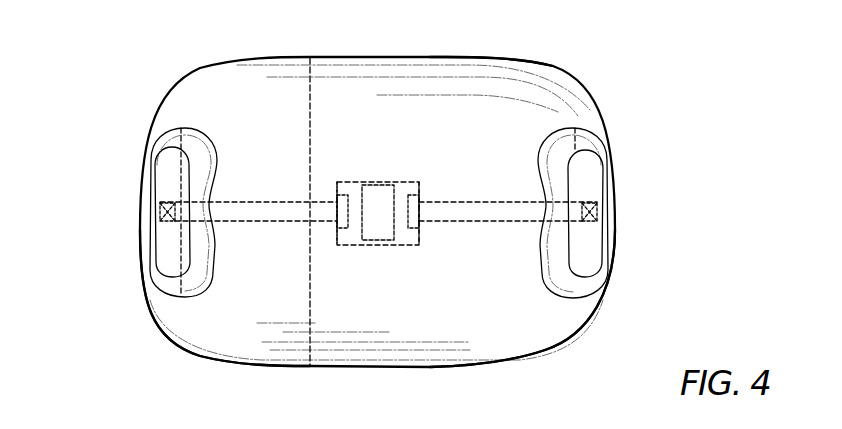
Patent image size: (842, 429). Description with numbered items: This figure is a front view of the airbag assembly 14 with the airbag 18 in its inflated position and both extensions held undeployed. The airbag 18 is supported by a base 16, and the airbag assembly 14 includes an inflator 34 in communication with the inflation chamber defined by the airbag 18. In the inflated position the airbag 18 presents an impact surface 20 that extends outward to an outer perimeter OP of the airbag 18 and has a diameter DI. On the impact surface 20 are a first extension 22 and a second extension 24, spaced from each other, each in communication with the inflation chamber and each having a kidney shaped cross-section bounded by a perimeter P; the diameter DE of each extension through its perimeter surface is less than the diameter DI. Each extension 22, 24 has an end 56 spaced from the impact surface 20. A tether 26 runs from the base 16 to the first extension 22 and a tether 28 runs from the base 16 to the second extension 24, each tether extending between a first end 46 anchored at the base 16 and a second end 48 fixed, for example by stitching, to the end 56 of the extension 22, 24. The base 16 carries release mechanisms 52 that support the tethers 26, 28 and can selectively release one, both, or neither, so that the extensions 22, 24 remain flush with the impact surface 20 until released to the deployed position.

The airbag assembly 14 is at (648, 200).
The base 16 is at (377, 182).
The airbag 18 is at (532, 328).
The impact surface 20 is at (422, 309).
The first extension 22 is at (152, 262).
The second extension 24 is at (604, 259).
The tether 26 is at (258, 202).
The tether 28 is at (500, 202).
The inflator 34 is at (377, 245).
The first end 46 is at (337, 228).
The second end 48 is at (177, 223).
The release mechanisms 52 is at (343, 182).
The end 56 is at (167, 177).
The perimeter P is at (180, 127).
The outer perimeter OP is at (476, 58).
The diameter DI is at (310, 96).
The diameter DE is at (160, 288).